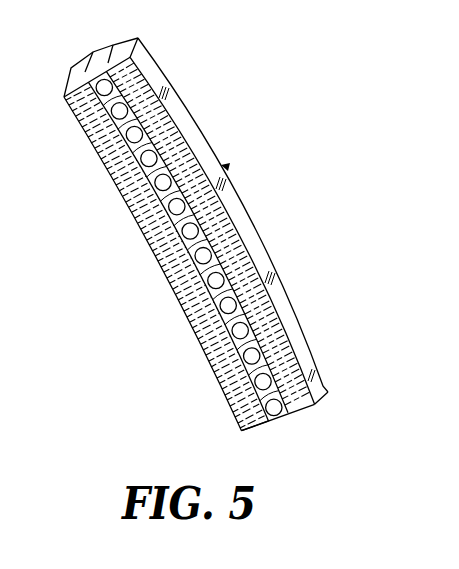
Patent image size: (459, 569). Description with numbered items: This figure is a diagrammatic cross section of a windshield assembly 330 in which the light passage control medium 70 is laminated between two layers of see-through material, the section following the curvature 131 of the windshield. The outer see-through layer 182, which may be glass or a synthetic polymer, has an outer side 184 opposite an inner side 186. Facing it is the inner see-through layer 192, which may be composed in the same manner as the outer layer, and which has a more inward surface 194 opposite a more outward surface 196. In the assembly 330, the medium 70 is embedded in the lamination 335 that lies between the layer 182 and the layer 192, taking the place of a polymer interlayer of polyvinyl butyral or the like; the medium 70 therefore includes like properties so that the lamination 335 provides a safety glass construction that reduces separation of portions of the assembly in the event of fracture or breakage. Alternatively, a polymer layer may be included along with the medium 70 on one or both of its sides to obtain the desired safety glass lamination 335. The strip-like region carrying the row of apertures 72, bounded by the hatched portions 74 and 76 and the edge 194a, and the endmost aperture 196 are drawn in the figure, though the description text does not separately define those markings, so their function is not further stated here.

The light passage control medium 70 is at (284, 417).
The row of apertures 72 is at (217, 310).
The first hatched strip portion 74 is at (118, 140).
The second hatched strip portion 76 is at (180, 171).
The curvature 131 is at (280, 309).
The outer see-through layer 182 is at (126, 40).
The outer side 184 is at (253, 250).
The inner side 186 is at (160, 126).
The inner see-through layer 192 is at (74, 62).
The more inward surface 194 is at (78, 118).
The left strip edge 194a is at (148, 248).
The more outward surface 196 is at (266, 423).
The assembly 330 is at (228, 167).
The lamination 335 is at (210, 357).